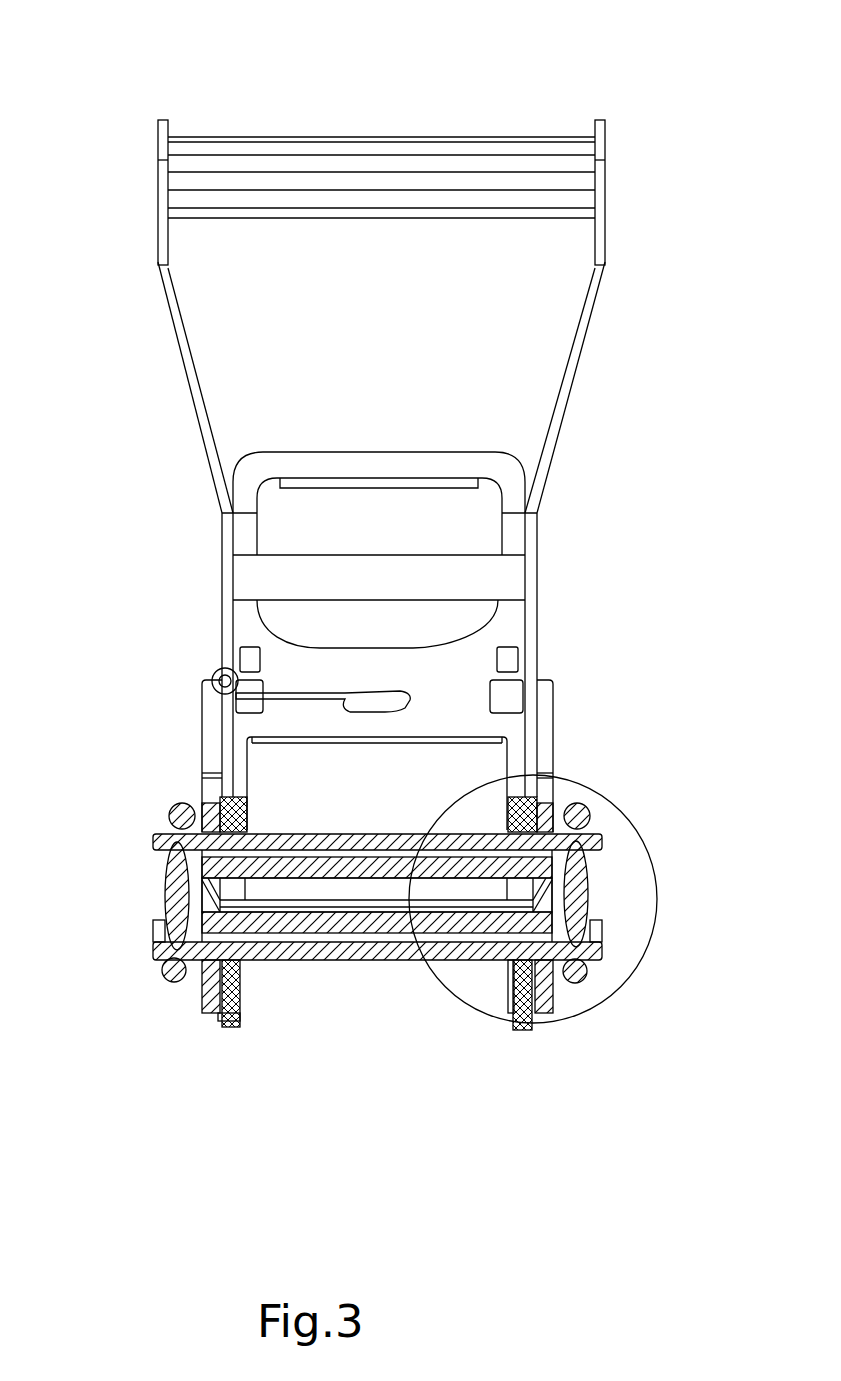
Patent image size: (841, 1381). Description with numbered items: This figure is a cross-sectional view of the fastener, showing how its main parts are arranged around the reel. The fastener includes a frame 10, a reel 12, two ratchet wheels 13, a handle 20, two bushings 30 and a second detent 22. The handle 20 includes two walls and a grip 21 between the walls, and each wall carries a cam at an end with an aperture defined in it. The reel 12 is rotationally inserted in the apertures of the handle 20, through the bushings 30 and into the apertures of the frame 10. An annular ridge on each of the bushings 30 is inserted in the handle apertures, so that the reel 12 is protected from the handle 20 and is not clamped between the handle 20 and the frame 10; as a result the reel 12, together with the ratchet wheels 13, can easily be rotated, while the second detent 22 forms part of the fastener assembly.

The handle 20 is at (391, 416).
The grip 21 is at (421, 148).
The second detent 22 is at (513, 537).
The frame 10 is at (552, 990).
The reel 12 is at (603, 953).
The ratchet wheels 13 is at (552, 901).
The bushings 30 is at (437, 908).